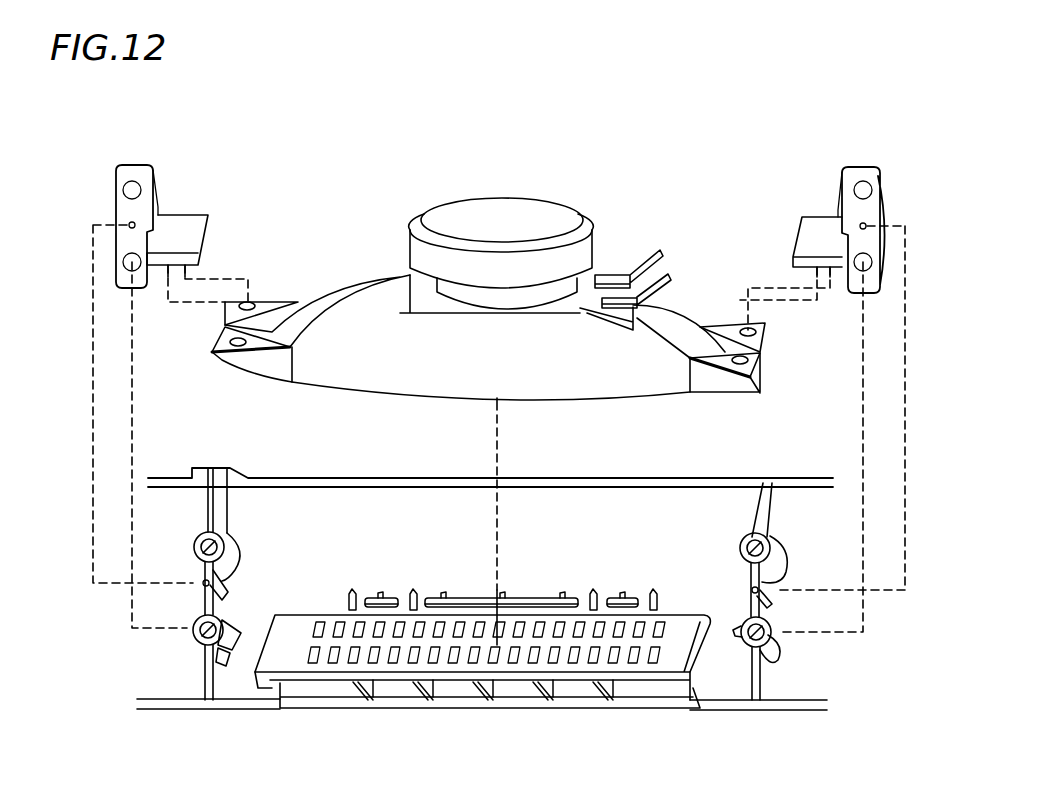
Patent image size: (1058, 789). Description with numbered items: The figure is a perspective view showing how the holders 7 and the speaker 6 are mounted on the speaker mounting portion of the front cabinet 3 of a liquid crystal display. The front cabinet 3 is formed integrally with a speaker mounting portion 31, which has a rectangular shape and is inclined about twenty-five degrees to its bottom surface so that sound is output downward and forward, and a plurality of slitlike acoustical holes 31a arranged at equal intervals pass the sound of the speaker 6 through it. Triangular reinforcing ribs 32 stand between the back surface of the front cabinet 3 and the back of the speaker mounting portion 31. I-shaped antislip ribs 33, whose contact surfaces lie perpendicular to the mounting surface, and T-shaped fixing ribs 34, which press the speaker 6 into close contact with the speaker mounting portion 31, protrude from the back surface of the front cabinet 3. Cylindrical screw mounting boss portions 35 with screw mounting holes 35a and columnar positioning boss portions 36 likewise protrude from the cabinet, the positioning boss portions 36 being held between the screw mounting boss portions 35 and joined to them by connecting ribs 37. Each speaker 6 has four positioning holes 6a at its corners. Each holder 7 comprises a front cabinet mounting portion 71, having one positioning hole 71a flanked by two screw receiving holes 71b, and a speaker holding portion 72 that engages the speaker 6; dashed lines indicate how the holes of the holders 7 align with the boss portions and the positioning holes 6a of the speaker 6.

The front cabinet 3 is at (320, 477).
The speaker 6 is at (499, 198).
The positioning hole 6a is at (250, 302).
The holder 7 is at (160, 216).
The front cabinet mounting portion 71 is at (129, 166).
The positioning hole 71a is at (128, 225).
The screw receiving hole 71b is at (141, 190).
The speaker holding portion 72 is at (200, 216).
The speaker mounting portion 31 is at (684, 648).
The acoustical hole 31a is at (302, 667).
The reinforcing rib 32 is at (356, 704).
The antislip rib 33 is at (352, 592).
The fixing rib 34 is at (396, 599).
The screw mounting boss portion 35 is at (232, 562).
The screw mounting hole 35a is at (200, 540).
The positioning boss portion 36 is at (205, 586).
The connecting rib 37 is at (223, 587).